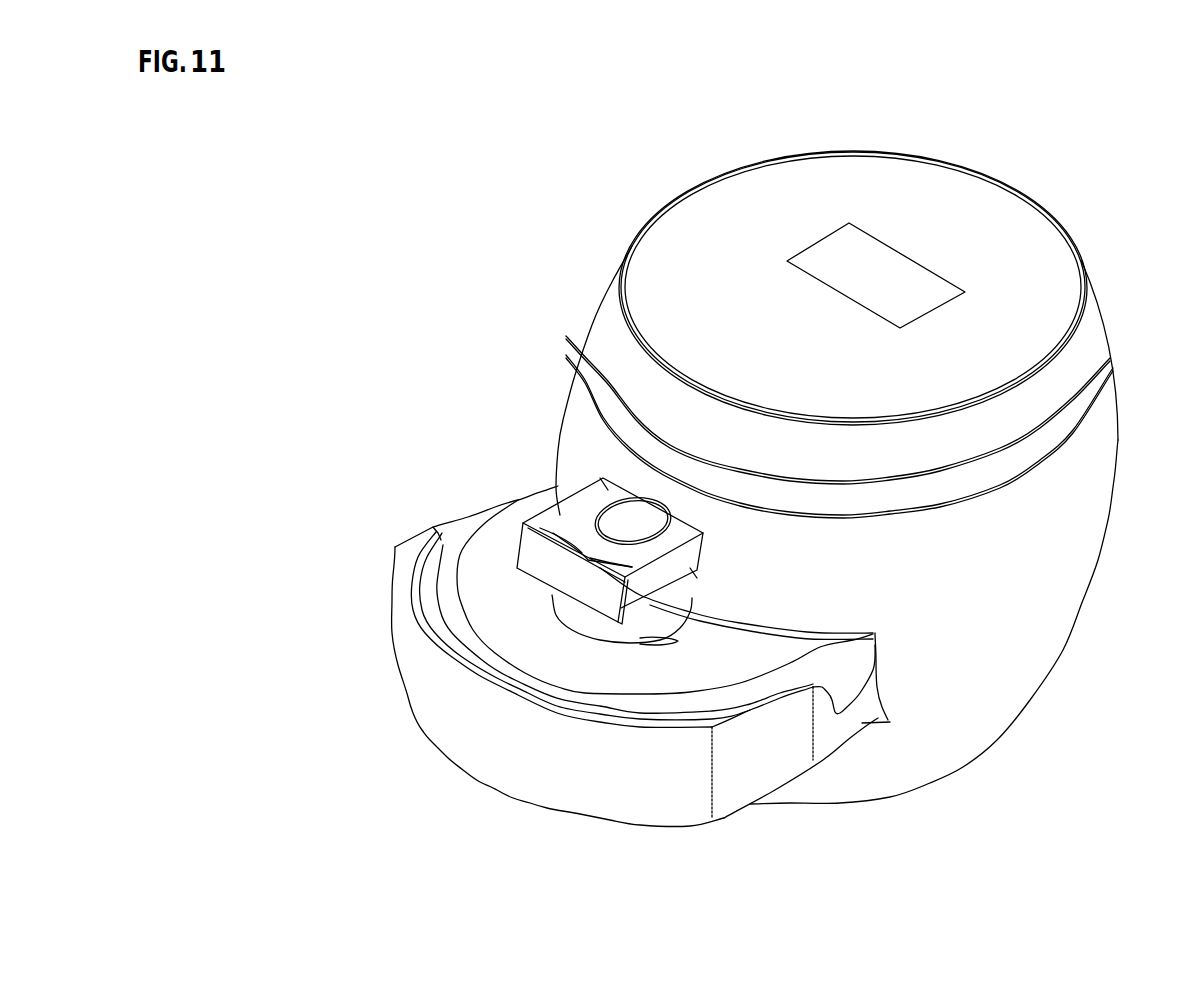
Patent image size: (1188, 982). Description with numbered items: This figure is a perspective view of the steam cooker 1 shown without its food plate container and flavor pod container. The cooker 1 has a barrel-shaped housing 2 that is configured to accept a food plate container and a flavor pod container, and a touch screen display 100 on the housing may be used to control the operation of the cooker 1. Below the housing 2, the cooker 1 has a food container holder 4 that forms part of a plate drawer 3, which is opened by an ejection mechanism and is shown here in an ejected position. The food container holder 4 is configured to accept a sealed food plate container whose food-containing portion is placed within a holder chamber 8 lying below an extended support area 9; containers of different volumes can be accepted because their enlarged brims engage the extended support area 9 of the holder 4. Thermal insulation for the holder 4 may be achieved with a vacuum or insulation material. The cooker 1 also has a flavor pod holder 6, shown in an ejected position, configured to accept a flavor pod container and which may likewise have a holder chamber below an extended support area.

The steam cooker 1 is at (545, 222).
The barrel-shaped housing 2 is at (720, 210).
The touch screen display 100 is at (885, 286).
The plate drawer 3 is at (417, 673).
The food container holder 4 is at (848, 672).
The flavor pod holder 6 is at (576, 523).
The holder chamber 8 is at (650, 625).
The extended support area 9 is at (708, 673).